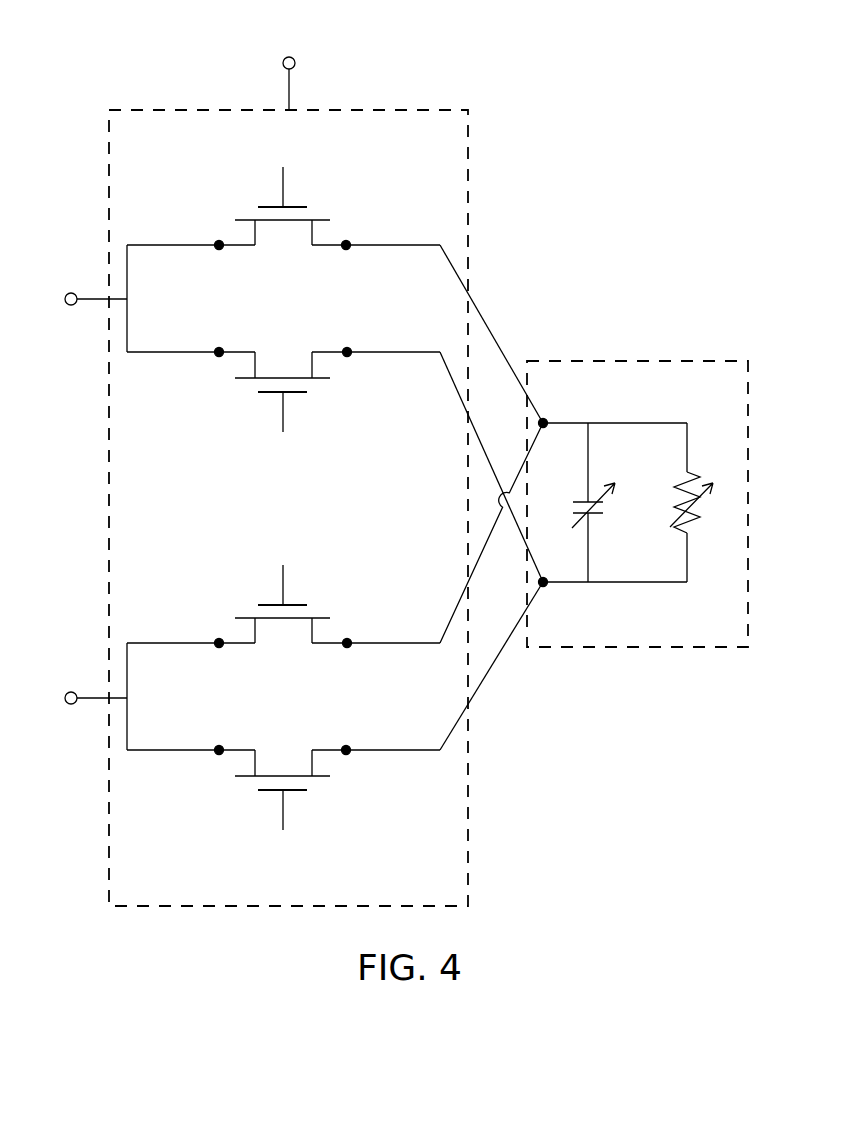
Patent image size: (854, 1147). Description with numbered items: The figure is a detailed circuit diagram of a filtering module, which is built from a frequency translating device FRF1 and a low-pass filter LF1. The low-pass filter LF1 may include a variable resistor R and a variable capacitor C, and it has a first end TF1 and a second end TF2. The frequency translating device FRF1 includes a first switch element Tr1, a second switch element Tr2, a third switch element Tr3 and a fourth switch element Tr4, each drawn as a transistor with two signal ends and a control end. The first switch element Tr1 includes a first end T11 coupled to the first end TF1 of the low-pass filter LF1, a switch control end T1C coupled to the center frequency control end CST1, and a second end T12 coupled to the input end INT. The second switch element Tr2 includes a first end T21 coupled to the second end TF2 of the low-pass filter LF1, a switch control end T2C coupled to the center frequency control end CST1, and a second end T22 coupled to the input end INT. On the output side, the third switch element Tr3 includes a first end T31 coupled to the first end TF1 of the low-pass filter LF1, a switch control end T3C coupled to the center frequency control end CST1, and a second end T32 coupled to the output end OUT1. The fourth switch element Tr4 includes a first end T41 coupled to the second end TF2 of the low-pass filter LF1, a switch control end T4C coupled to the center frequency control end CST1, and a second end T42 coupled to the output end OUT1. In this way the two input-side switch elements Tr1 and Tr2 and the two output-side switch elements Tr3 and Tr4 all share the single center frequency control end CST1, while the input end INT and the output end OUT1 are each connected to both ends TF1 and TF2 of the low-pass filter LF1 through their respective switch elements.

The frequency translating device FRF1 is at (428, 110).
The low-pass filter LF1 is at (695, 361).
The center frequency control end CST1 is at (289, 56).
The input end INT is at (89, 287).
The output end OUT1 is at (88, 683).
The first switch element Tr1 is at (257, 210).
The second switch element Tr2 is at (258, 386).
The third switch element Tr3 is at (260, 608).
The fourth switch element Tr4 is at (258, 784).
The switch control end T1C is at (285, 178).
The switch control end T2C is at (283, 432).
The switch control end T3C is at (285, 580).
The switch control end T4C is at (283, 830).
The first end T11 is at (347, 241).
The second end T12 is at (218, 241).
The first end T21 is at (347, 357).
The second end T22 is at (219, 357).
The first end T31 is at (348, 639).
The second end T32 is at (219, 639).
The first end T41 is at (346, 755).
The second end T42 is at (219, 755).
The first end TF1 is at (545, 420).
The second end TF2 is at (545, 585).
The variable capacitor C is at (577, 508).
The variable resistor R is at (698, 515).